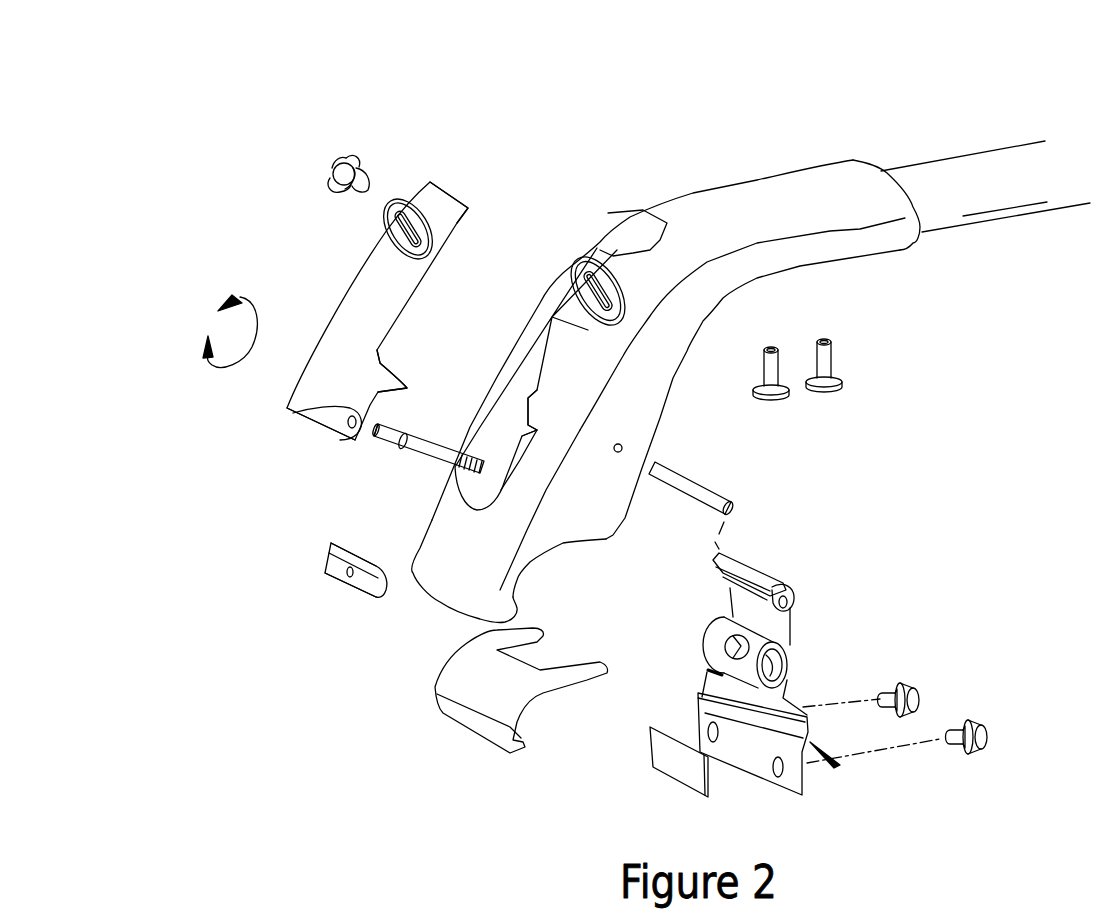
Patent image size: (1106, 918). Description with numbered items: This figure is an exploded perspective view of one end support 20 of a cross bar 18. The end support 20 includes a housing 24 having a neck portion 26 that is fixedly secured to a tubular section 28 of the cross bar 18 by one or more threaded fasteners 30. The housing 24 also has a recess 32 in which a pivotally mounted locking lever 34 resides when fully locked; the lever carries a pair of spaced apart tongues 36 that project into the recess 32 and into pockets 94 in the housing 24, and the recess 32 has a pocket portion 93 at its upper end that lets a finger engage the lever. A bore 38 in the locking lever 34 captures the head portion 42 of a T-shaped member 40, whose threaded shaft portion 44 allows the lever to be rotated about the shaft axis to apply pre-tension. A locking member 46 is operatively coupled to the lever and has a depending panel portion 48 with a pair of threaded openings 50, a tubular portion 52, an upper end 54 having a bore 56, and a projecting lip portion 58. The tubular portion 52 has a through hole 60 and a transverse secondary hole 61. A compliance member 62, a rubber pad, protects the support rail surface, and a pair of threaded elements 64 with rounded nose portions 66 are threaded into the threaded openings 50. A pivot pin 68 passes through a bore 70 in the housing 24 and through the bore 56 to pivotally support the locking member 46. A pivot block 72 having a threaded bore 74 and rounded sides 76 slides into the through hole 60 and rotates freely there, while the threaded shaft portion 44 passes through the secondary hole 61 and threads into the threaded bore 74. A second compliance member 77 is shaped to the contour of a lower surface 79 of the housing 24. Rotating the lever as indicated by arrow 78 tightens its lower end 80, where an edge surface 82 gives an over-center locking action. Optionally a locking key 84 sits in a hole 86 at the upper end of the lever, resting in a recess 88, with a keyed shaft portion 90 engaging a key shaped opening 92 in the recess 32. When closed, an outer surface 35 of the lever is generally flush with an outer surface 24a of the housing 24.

The cross bar 18 is at (885, 117).
The end support 20 is at (488, 118).
The housing 24 is at (697, 190).
The outer surface of the housing 24a is at (600, 362).
The neck portion 26 is at (832, 178).
The tubular section 28 is at (958, 170).
The threaded fasteners 30 is at (771, 347).
The recess 32 is at (528, 348).
The locking lever 34 is at (310, 257).
The outer surface 35 is at (345, 325).
The tongues 36 is at (390, 362).
The bore 38 is at (320, 417).
The T-shaped member 40 is at (398, 462).
The head portion 42 is at (380, 422).
The threaded shaft portion 44 is at (415, 440).
The locking member 46 is at (760, 686).
The panel portion 48 is at (797, 790).
The threaded openings 50 is at (708, 730).
The tubular portion 52 is at (728, 622).
The upper end 54 is at (797, 606).
The bore 56 is at (797, 590).
The projecting lip portion 58 is at (745, 573).
The through hole 60 is at (787, 662).
The secondary hole 61 is at (733, 652).
The compliance member 62 is at (672, 768).
The threaded elements 64 is at (906, 685).
The rounded nose portions 66 is at (880, 698).
The pivot pin 68 is at (735, 500).
The bore 70 is at (622, 448).
The pivot block 72 is at (335, 515).
The threaded bore 74 is at (350, 575).
The rounded sides 76 is at (360, 552).
The second compliance member 77 is at (545, 688).
The arrow 78 is at (243, 350).
The lower surface 79 is at (563, 555).
The lower end 80 is at (335, 412).
The edge surface 82 is at (347, 438).
The locking key 84 is at (342, 175).
The hole 86 is at (413, 230).
The recess 88 is at (402, 248).
The keyed shaft portion 90 is at (366, 178).
The key shaped opening 92 is at (588, 292).
The pocket portion 93 is at (633, 252).
The pockets 94 is at (528, 412).